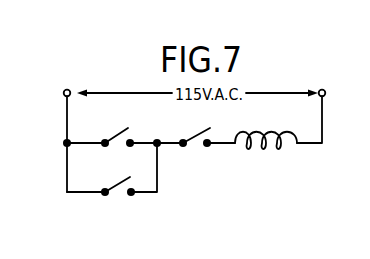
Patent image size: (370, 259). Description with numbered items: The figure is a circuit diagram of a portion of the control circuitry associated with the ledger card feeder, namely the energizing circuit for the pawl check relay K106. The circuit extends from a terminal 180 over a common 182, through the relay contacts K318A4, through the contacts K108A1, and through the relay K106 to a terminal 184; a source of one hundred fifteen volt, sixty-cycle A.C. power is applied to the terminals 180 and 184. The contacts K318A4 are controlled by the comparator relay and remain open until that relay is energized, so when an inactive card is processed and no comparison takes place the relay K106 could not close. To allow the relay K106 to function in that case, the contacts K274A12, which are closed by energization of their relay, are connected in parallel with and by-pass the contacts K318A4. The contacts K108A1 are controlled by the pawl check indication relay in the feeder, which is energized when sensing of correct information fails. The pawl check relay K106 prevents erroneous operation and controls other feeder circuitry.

The terminal 180 is at (65, 90).
The common 182 is at (66, 132).
The terminal 184 is at (325, 90).
The relay contacts K318A4 is at (117, 136).
The contacts K108A1 is at (198, 130).
The pawl check relay K106 is at (258, 132).
The contacts K274A12 is at (118, 186).